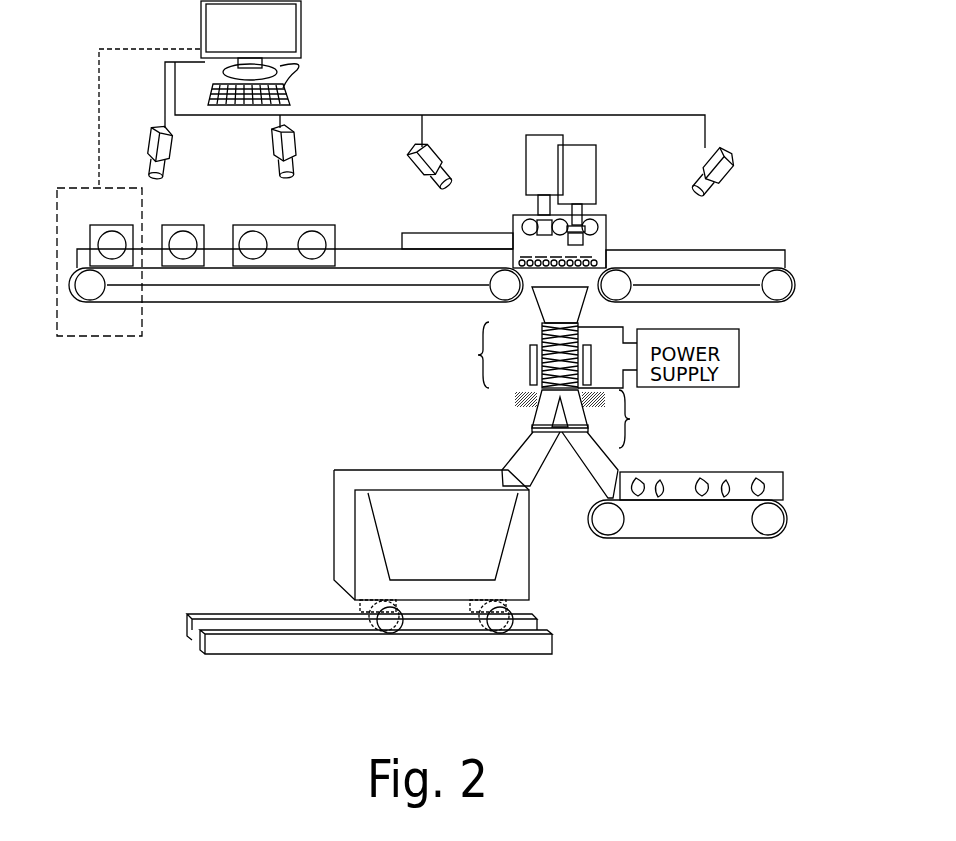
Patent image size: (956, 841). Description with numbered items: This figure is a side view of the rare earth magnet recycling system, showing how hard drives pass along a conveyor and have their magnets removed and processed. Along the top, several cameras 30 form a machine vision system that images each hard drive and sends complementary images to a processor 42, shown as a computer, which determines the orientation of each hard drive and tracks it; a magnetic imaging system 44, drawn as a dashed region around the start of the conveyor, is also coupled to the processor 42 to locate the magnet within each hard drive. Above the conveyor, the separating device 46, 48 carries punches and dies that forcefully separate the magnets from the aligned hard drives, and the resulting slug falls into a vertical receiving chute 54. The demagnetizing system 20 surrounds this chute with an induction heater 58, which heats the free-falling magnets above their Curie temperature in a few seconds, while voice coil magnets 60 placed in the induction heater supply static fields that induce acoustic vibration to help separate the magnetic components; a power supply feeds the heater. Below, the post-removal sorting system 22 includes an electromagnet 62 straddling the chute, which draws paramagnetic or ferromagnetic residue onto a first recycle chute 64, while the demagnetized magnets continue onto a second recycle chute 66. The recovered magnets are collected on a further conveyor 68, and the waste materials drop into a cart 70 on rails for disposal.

The demagnetizing system 20 is at (470, 355).
The post-removal sorting system 22 is at (638, 419).
The camera 30 is at (172, 152).
The processor 42 is at (302, 28).
The magnetic imaging system 44 is at (78, 188).
The separating device 46 is at (526, 166).
The separating device 48 is at (597, 190).
The vertical receiving chute 54 is at (582, 312).
The induction heater 58 is at (550, 326).
The voice coil magnet 60 is at (585, 367).
The electromagnet 62 is at (522, 408).
The first recycle chute 64 is at (530, 466).
The second recycle chute 66 is at (617, 468).
The conveyor 68 is at (783, 493).
The cart 70 is at (530, 567).